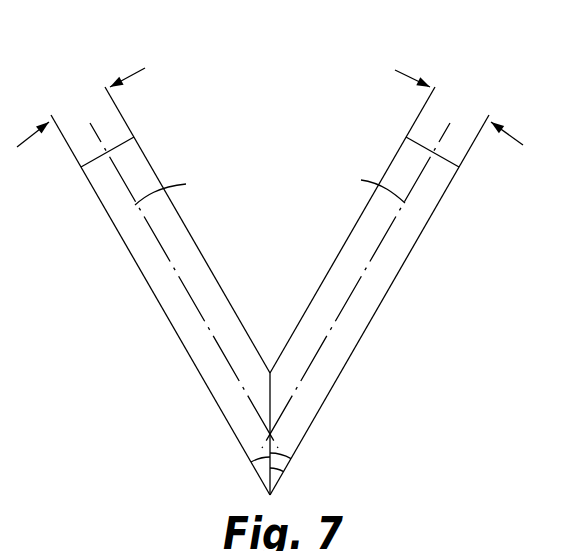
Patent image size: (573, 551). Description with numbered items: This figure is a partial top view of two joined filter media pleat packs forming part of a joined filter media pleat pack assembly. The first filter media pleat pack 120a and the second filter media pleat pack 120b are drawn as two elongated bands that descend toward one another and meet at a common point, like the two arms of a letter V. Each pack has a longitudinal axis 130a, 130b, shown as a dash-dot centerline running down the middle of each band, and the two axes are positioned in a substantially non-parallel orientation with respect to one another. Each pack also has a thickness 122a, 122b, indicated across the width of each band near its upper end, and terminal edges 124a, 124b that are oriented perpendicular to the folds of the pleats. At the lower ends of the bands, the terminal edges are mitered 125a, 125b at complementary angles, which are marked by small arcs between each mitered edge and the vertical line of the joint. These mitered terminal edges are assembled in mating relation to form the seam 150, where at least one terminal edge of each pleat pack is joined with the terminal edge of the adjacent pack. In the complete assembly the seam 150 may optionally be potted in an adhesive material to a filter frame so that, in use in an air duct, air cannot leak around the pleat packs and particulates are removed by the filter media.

The filter media pleat pack 120a is at (167, 292).
The filter media pleat pack 120b is at (373, 290).
The thickness 122a is at (137, 70).
The thickness 122b is at (398, 70).
The terminal edge 124a is at (117, 140).
The terminal edge 124b is at (427, 133).
The mitered terminal edge 125a is at (266, 417).
The mitered terminal edge 125b is at (270, 393).
The longitudinal axis 130a is at (186, 188).
The longitudinal axis 130b is at (356, 183).
The seam 150 is at (282, 470).